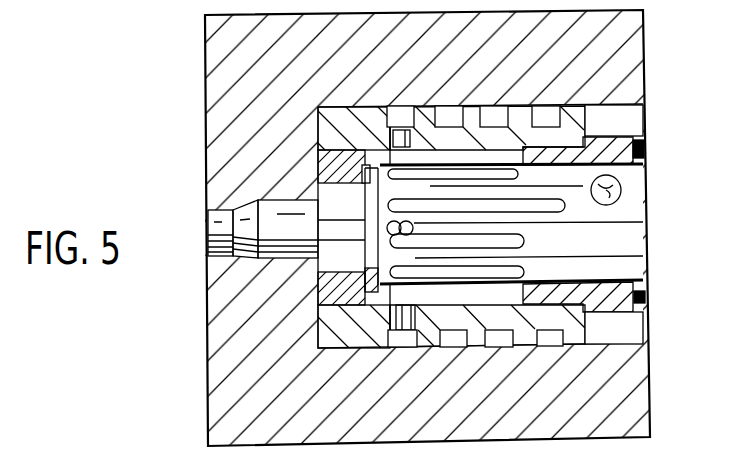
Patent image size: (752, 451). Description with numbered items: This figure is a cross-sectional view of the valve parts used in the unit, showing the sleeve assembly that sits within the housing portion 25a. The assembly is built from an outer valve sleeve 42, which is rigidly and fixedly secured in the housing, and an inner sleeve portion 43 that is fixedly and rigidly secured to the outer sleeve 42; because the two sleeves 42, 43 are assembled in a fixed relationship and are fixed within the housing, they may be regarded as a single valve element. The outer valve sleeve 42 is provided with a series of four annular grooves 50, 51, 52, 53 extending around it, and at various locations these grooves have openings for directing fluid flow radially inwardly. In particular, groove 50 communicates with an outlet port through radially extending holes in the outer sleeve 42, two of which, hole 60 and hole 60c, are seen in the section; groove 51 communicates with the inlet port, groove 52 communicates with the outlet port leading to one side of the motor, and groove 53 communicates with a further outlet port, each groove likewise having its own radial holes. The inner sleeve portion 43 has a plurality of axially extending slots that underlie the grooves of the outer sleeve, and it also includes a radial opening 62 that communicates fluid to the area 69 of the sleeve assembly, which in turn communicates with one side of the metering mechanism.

The housing portion 25a is at (645, 40).
The outer valve sleeve 42 is at (328, 133).
The inner sleeve portion 43 is at (335, 158).
The annular groove 50 is at (402, 122).
The annular groove 51 is at (452, 122).
The annular groove 52 is at (497, 122).
The annular groove 53 is at (549, 122).
The radially extending hole 60 is at (385, 148).
The radially extending hole 60c is at (388, 231).
The radial opening 62 is at (621, 185).
The area of the sleeve assembly 69 is at (625, 118).